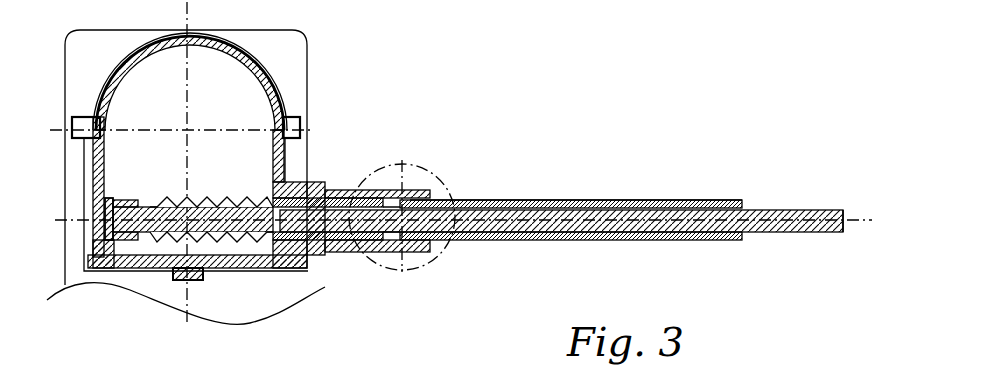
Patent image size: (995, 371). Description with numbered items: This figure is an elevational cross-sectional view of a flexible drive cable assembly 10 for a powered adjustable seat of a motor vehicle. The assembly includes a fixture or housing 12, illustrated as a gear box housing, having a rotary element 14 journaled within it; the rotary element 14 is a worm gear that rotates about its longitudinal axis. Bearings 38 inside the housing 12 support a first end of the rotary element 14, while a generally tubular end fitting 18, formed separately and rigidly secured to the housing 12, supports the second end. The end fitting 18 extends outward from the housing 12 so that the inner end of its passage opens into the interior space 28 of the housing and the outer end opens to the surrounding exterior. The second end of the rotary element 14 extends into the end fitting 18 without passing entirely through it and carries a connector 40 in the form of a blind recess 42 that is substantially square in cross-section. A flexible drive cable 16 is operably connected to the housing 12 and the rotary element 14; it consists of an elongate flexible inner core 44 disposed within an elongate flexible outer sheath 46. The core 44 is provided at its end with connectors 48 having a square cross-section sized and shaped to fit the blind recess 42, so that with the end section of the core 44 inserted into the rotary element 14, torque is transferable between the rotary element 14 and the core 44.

The flexible drive cable assembly 10 is at (500, 50).
The housing 12 is at (308, 57).
The rotary element 14 is at (207, 268).
The flexible drive cable 16 is at (666, 199).
The end fitting 18 is at (330, 198).
The interior space 28 is at (238, 110).
The bearings 38 is at (132, 272).
The connector 40 is at (338, 245).
The blind recess 42 is at (372, 245).
The core 44 is at (777, 209).
The outer sheath 46 is at (595, 200).
The connectors 48 is at (818, 210).